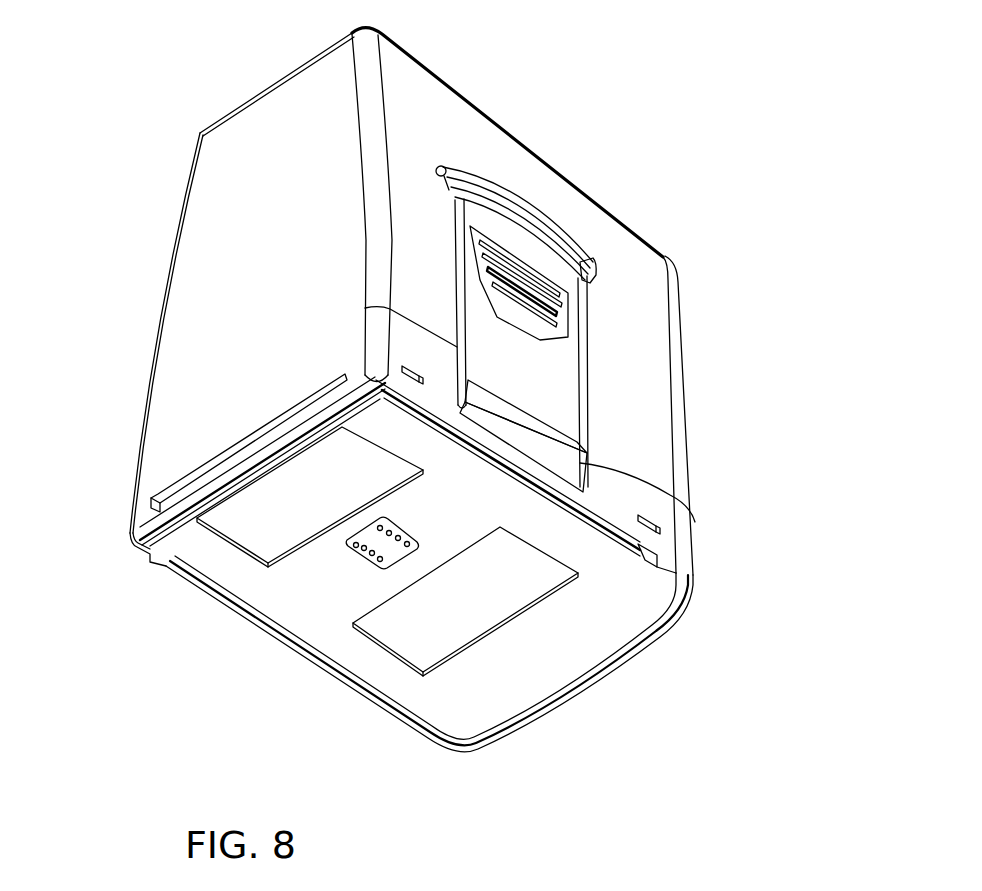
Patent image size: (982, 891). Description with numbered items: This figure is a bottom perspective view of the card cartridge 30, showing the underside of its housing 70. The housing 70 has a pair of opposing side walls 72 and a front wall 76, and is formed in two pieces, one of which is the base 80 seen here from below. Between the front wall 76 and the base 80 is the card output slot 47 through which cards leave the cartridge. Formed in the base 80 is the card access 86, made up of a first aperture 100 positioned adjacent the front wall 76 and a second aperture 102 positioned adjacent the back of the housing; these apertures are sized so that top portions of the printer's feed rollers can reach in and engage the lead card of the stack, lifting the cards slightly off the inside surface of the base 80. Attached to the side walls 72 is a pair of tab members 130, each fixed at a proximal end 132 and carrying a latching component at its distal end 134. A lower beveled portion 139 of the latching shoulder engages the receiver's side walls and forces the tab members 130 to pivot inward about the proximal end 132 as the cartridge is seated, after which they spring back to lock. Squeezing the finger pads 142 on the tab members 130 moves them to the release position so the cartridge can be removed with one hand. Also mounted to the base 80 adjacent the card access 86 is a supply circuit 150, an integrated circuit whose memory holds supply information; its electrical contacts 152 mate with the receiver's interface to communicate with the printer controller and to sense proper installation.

The card cartridge 30 is at (712, 98).
The housing 70 is at (422, 301).
The side walls 72 is at (648, 263).
The front wall 76 is at (193, 231).
The card output slot 47 is at (197, 480).
The base 80 is at (467, 674).
The card access 86 is at (449, 673).
The first aperture 100 is at (250, 527).
The second aperture 102 is at (507, 603).
The tab members 130 is at (613, 285).
The proximal end 132 is at (517, 207).
The distal end 134 is at (670, 495).
The lower beveled portion 139 is at (503, 410).
The finger pads 142 is at (558, 310).
The supply circuit 150 is at (383, 545).
The electrical contacts 152 is at (367, 560).